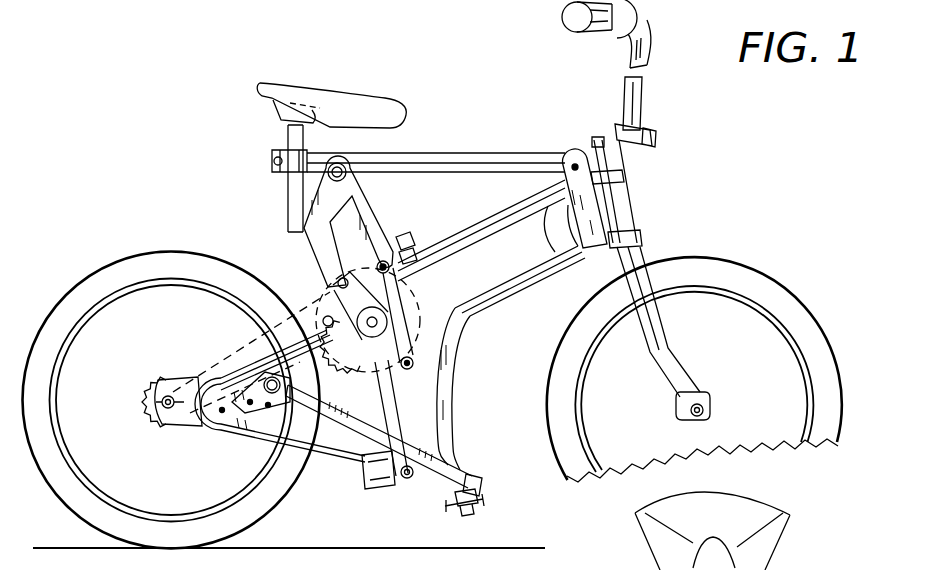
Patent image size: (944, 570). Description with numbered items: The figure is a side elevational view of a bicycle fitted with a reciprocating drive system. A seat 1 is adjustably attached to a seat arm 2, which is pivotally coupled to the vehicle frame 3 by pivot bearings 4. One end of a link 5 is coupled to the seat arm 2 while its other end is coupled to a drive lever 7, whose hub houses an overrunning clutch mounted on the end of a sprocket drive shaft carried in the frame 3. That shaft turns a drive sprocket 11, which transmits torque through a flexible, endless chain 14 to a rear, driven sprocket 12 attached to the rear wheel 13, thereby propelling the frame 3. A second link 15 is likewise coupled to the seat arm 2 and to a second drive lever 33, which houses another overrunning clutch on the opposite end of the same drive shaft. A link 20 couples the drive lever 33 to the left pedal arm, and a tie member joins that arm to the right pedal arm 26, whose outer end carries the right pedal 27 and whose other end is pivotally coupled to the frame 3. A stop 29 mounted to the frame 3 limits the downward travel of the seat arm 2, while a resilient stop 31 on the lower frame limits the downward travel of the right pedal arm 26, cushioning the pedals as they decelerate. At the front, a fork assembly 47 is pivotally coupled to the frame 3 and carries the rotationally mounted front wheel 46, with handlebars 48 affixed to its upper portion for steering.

The seat 1 is at (305, 84).
The seat arm 2 is at (447, 152).
The vehicle frame 3 is at (497, 217).
The pivot bearings 4 is at (576, 152).
The link 5 is at (382, 192).
The drive lever 7 is at (425, 288).
The drive sprocket 11 is at (325, 362).
The rear driven sprocket 12 is at (152, 397).
The rear wheel 13 is at (137, 252).
The flexible endless chain 14 is at (300, 300).
The link 15 is at (303, 240).
The link 20 is at (455, 395).
The right pedal arm 26 is at (350, 428).
The right pedal 27 is at (460, 515).
The stop 29 is at (407, 232).
The stop 31 is at (350, 468).
The drive lever 33 is at (520, 260).
The front wheel 46 is at (763, 275).
The fork assembly 47 is at (648, 245).
The handlebars 48 is at (646, 88).